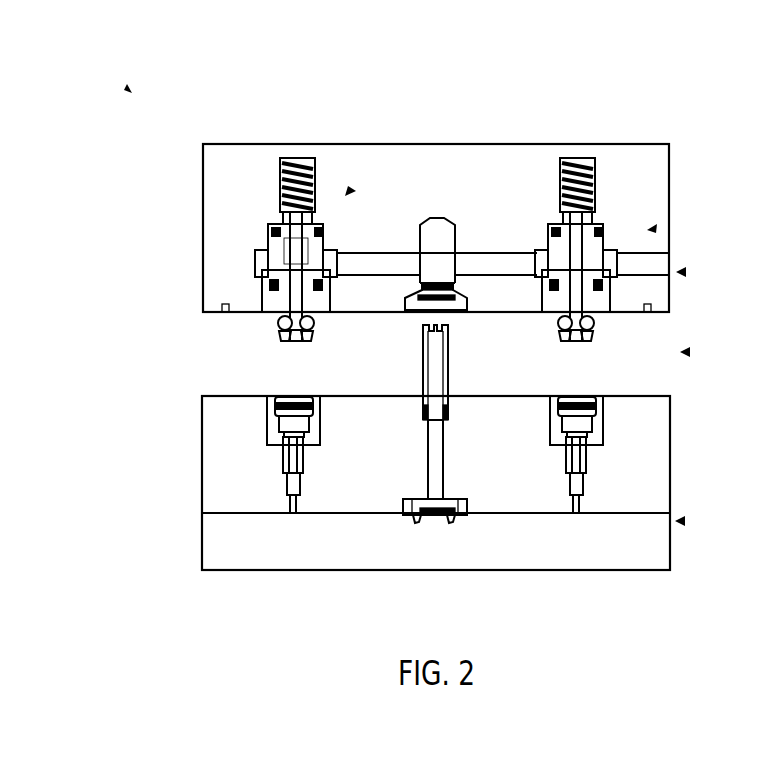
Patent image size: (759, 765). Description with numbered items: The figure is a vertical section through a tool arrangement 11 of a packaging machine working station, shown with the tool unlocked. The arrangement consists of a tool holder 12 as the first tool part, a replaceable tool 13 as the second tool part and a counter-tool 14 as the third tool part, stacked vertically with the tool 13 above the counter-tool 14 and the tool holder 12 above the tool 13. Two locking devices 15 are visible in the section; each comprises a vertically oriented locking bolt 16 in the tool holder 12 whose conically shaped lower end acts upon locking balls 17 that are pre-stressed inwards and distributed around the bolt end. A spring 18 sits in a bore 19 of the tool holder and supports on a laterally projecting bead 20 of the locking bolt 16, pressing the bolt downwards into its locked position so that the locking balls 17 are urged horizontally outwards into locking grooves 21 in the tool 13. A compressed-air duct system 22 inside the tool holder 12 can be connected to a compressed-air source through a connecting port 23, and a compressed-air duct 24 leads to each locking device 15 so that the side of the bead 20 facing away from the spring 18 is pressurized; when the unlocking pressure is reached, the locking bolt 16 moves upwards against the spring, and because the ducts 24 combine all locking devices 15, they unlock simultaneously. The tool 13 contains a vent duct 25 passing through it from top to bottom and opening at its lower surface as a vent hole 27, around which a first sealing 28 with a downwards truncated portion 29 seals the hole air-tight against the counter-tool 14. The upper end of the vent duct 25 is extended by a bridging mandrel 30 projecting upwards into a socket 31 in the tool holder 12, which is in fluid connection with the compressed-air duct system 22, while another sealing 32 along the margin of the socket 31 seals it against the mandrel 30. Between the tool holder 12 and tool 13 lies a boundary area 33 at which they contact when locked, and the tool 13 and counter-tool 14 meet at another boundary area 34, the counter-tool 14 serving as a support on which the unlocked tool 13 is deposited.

The tool arrangement 11 is at (127, 88).
The tool holder 12 is at (212, 213).
The replaceable tool 13 is at (213, 452).
The counter-tool 14 is at (213, 543).
The locking device 15 is at (433, 216).
The locking bolt 16 is at (290, 298).
The locking balls 17 is at (283, 324).
The spring 18 is at (297, 160).
The bore 19 is at (324, 160).
The bead 20 is at (307, 242).
The locking grooves 21 is at (300, 396).
The compressed-air duct system 22 is at (437, 240).
The connecting port 23 is at (686, 272).
The compressed-air duct 24 is at (388, 258).
The vent duct 25 is at (445, 440).
The vent hole 27 is at (430, 500).
The first sealing 28 is at (465, 500).
The truncated portion 29 is at (418, 522).
The bridging mandrel 30 is at (425, 345).
The socket 31 is at (445, 263).
The sealing 32 is at (405, 302).
The boundary area 33 is at (690, 352).
The boundary area 34 is at (685, 521).